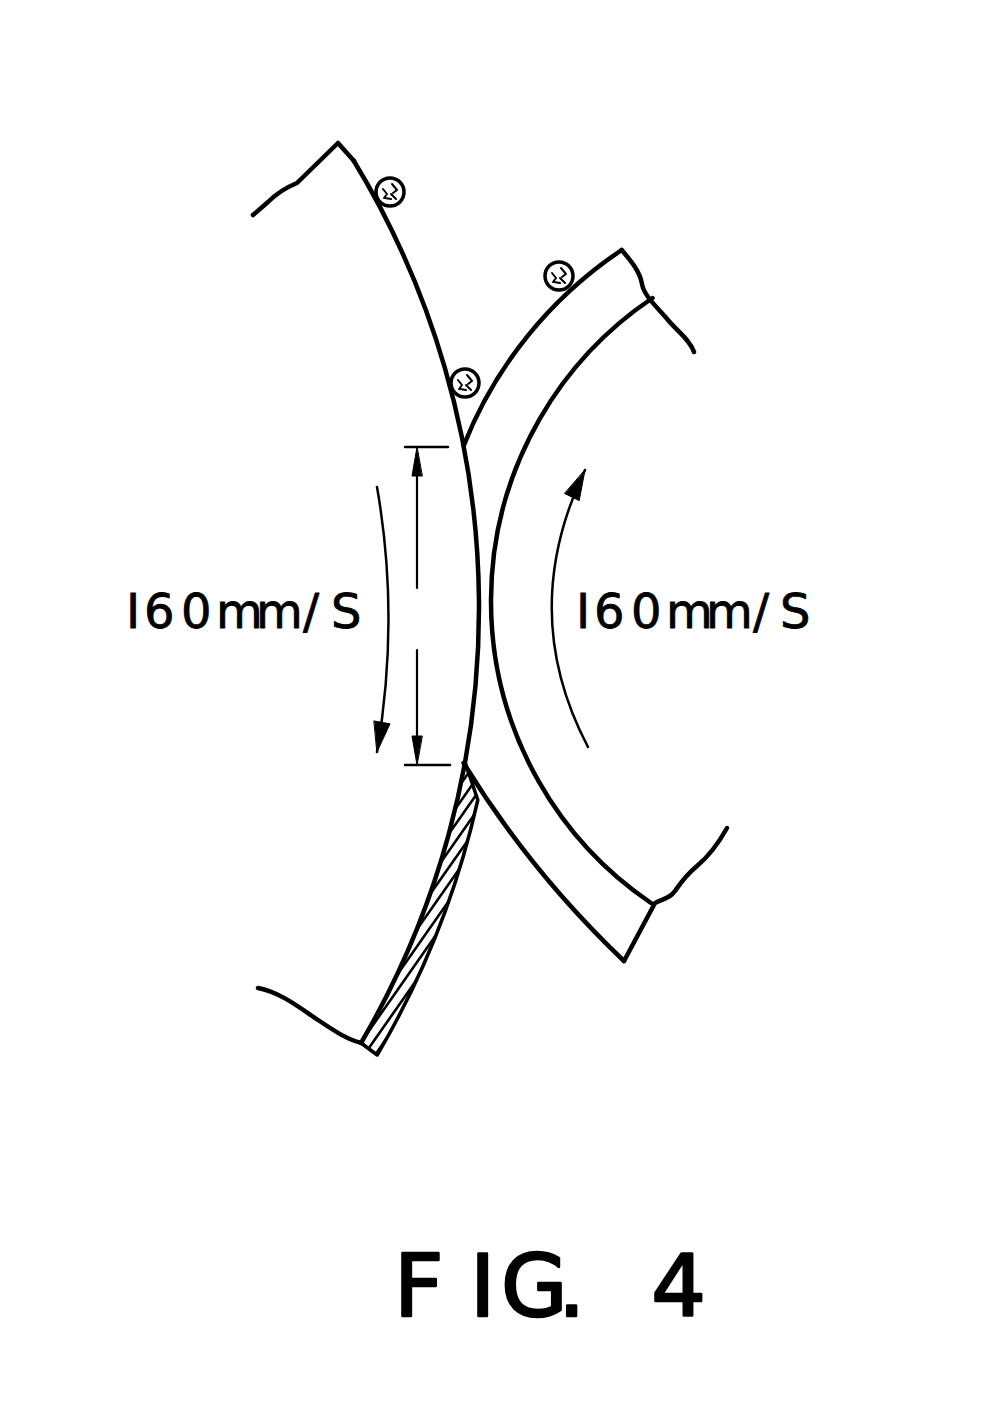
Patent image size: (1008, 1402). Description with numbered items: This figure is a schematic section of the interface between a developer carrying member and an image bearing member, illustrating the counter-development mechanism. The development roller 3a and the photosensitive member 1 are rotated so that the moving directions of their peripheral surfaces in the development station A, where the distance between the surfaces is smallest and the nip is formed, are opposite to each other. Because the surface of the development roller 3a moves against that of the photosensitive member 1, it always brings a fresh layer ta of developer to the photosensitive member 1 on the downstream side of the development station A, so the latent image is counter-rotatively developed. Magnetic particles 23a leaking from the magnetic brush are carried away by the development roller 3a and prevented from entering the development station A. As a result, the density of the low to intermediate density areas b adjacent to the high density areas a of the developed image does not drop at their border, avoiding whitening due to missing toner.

The photosensitive member 1 is at (333, 190).
The development roller 3a is at (657, 344).
The magnetic particles 23a is at (404, 183).
The layer of developer ta is at (612, 293).
The high density areas a is at (460, 883).
The low to intermediate density areas b is at (405, 1000).
The development station A is at (426, 606).